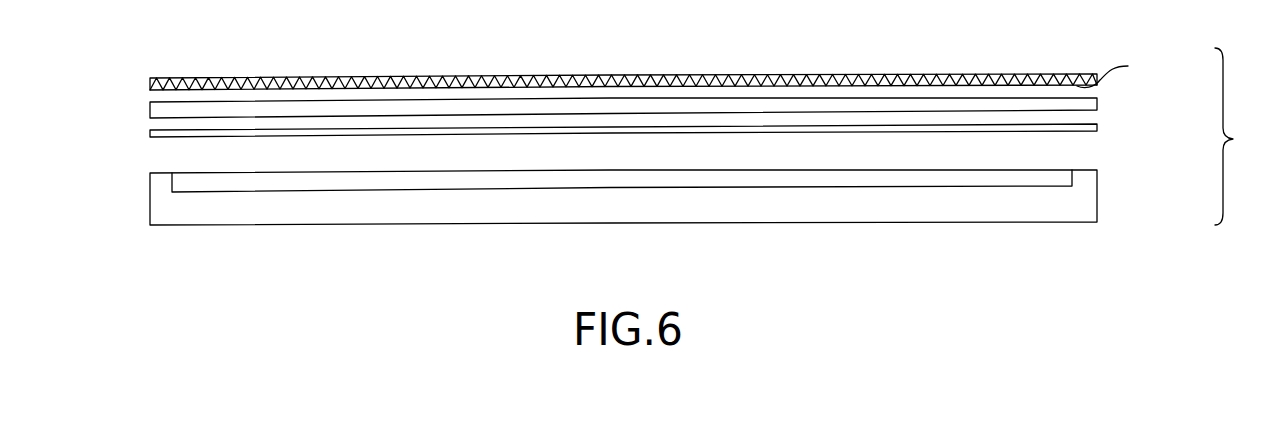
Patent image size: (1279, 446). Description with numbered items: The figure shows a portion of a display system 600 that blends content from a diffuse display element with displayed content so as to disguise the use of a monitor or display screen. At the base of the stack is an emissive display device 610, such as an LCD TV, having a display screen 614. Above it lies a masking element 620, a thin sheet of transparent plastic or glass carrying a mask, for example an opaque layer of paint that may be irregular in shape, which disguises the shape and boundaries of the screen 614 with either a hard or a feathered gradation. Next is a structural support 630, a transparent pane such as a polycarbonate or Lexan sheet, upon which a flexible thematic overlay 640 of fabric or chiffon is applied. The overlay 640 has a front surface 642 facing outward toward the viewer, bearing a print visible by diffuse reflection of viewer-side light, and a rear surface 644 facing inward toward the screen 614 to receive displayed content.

The display system 600 is at (1243, 136).
The emissive display device 610 is at (648, 261).
The display screen 614 is at (1057, 170).
The masking element 620 is at (1103, 123).
The structural support 630 is at (147, 103).
The flexible thematic overlay 640 is at (604, 56).
The front surface 642 is at (278, 76).
The rear surface 644 is at (1120, 72).